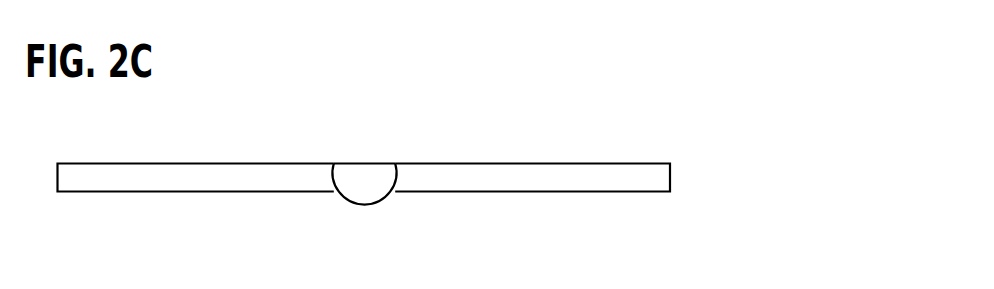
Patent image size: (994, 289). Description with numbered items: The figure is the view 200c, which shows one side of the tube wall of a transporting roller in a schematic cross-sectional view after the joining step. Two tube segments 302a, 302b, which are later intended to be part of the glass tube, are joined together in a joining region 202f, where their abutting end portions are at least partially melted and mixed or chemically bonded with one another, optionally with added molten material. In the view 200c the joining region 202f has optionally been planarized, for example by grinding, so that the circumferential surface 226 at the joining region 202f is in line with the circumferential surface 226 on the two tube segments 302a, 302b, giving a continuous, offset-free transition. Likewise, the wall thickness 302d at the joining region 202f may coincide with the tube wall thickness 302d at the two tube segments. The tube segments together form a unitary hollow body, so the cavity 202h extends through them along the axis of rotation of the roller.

The view 200c is at (753, 77).
The tube segment 302a is at (227, 172).
The tube segment 302b is at (532, 172).
The wall thickness 302d is at (85, 87).
The circumferential surface 226 is at (357, 143).
The joining region 202f is at (367, 186).
The cavity 202h is at (272, 268).